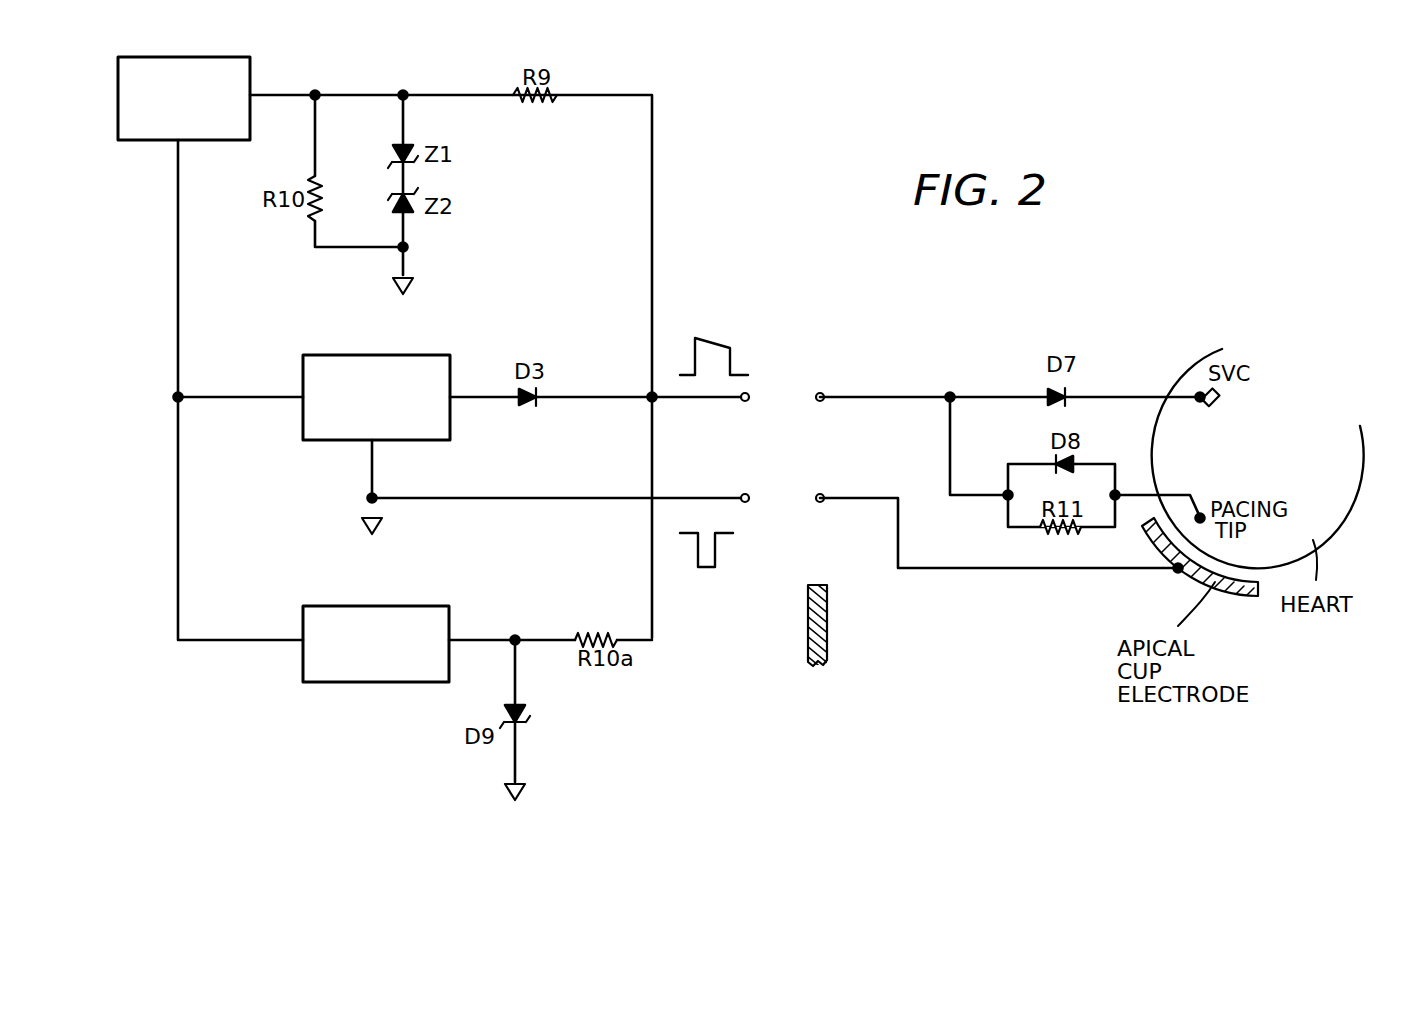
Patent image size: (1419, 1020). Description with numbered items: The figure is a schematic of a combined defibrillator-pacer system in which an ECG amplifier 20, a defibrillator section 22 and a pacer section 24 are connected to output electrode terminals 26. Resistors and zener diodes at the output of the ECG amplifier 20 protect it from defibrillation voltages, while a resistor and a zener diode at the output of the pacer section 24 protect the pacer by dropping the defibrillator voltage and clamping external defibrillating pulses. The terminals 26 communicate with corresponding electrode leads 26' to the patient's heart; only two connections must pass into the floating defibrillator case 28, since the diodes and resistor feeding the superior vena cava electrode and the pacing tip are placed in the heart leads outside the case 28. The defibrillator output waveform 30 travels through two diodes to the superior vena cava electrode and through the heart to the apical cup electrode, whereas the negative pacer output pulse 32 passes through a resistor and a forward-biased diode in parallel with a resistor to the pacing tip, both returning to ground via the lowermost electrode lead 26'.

The ECG amplifier 20 is at (141, 138).
The defibrillator section 22 is at (318, 354).
The pacer section 24 is at (311, 605).
The output electrode terminals 26 is at (728, 447).
The electrode leads 26' is at (837, 447).
The defibrillator case 28 is at (808, 636).
The defibrillator output waveform 30 is at (726, 349).
The pacer output pulse waveform 32 is at (697, 566).